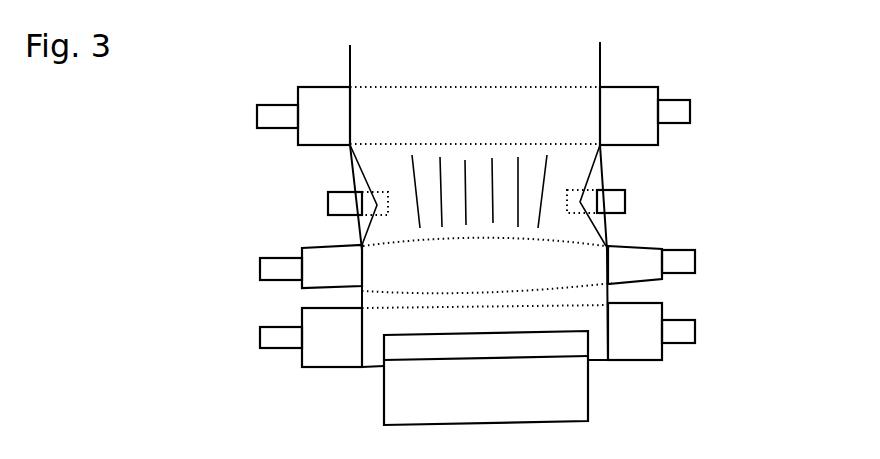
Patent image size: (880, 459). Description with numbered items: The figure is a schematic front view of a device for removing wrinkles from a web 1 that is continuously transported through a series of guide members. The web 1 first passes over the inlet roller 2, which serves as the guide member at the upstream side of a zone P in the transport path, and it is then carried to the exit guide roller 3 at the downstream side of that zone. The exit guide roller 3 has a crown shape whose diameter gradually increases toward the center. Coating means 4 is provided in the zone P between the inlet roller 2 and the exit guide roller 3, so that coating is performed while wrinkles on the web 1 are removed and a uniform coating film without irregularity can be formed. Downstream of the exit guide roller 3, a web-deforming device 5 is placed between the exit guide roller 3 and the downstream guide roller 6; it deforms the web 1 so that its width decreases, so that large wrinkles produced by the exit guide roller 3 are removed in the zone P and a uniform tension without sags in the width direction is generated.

The web 1 is at (600, 60).
The inlet roller 2 is at (695, 332).
The exit guide roller 3 is at (695, 262).
The coating means 4 is at (587, 400).
The web-deforming device 5 is at (625, 203).
The guide roller 6 is at (690, 112).
The zone P is at (252, 270).